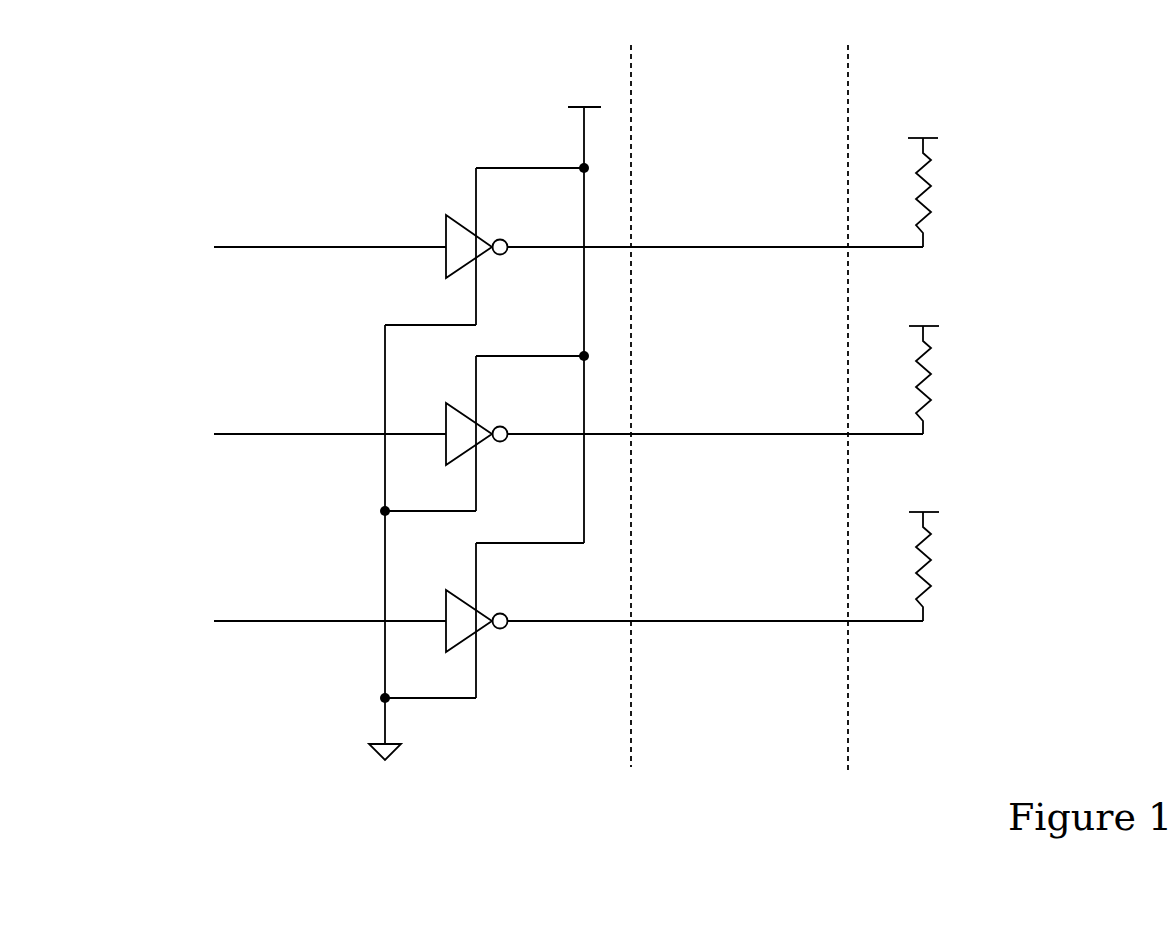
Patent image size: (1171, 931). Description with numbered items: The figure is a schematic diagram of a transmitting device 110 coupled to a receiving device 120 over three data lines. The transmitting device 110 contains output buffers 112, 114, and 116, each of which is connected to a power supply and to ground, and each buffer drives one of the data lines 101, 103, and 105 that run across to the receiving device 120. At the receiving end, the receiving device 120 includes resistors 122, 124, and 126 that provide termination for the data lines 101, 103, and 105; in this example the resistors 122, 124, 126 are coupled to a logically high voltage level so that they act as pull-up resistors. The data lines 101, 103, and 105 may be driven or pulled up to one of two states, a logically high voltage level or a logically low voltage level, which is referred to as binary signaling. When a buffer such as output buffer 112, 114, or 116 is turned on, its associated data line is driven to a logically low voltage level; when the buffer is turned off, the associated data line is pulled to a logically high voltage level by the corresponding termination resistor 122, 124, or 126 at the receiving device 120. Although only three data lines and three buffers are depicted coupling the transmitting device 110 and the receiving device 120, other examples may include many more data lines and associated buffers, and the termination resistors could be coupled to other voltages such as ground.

The transmitting device 110 is at (461, 420).
The output buffer 112 is at (460, 237).
The output buffer 114 is at (460, 425).
The output buffer 116 is at (460, 615).
The data line 101 is at (568, 235).
The data line 103 is at (568, 424).
The data line 105 is at (568, 610).
The receiving device 120 is at (845, 408).
The resistor 122 is at (937, 192).
The resistor 124 is at (941, 380).
The resistor 126 is at (943, 566).